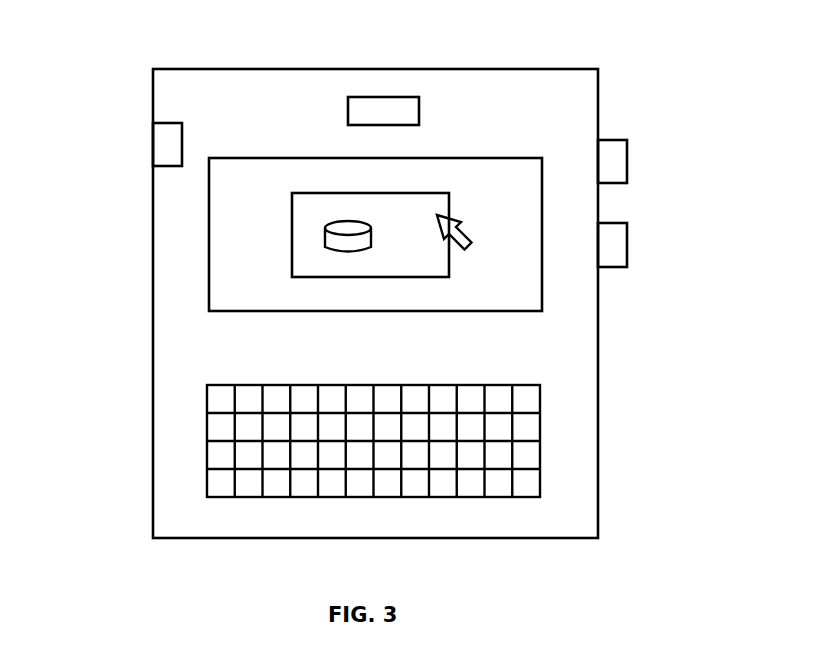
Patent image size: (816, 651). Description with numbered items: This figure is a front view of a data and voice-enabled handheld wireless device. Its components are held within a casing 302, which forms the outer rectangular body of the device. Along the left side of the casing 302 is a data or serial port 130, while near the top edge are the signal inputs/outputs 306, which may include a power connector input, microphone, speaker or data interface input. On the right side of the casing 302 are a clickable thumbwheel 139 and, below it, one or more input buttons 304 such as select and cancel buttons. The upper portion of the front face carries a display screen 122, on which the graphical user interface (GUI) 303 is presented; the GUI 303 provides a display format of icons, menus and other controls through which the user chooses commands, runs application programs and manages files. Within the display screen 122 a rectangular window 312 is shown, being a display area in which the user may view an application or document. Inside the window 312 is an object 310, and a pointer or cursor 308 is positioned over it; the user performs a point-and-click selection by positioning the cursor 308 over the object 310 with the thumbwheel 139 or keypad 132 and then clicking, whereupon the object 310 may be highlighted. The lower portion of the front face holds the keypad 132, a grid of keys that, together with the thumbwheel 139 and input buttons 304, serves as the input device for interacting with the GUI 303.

The casing 302 is at (265, 97).
The data or serial port 130 is at (165, 145).
The signal inputs/outputs 306 is at (389, 97).
The clickable thumbwheel 139 is at (611, 160).
The input buttons 304 is at (611, 250).
The display screen 122 is at (209, 192).
The graphical user interface 303 is at (222, 220).
The window 312 is at (415, 208).
The object 310 is at (323, 237).
The pointer or cursor 308 is at (473, 249).
The keypad 132 is at (540, 427).